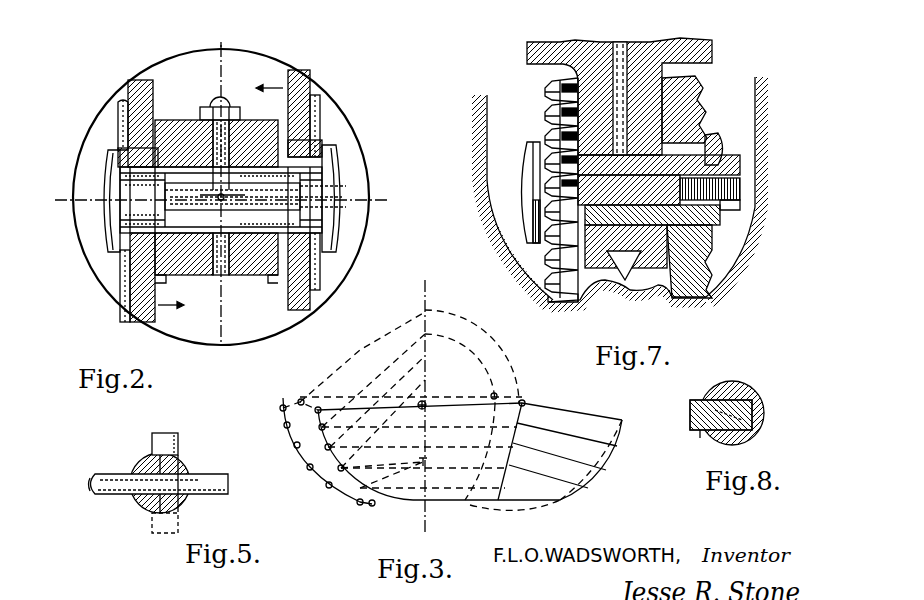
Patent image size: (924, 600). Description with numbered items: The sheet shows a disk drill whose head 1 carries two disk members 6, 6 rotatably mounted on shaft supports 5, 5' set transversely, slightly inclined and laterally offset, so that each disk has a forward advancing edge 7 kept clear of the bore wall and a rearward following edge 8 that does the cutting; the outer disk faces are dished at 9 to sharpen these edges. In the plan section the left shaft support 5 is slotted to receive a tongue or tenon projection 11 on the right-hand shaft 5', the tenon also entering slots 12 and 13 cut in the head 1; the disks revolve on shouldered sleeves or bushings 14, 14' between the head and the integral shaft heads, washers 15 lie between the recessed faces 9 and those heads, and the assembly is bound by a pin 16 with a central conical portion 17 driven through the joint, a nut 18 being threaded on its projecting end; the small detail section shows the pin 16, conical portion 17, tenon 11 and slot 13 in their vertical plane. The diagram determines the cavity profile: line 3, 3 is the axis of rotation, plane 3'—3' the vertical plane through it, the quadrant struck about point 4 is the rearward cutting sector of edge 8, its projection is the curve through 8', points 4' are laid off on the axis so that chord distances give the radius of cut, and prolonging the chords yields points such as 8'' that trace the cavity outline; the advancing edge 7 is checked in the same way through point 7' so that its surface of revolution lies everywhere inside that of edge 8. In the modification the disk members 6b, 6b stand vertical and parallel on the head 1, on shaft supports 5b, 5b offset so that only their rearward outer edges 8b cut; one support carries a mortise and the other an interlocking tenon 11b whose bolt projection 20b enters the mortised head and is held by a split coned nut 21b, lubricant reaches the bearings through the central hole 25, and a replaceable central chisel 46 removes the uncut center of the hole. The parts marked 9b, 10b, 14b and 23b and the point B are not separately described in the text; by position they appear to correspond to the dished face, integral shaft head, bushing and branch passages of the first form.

In FIG. 7, the head 1 is at (665, 67).
In FIG. 2, the axial line of rotation 3 is at (222, 174).
In FIG. 3, the axial line of rotation 3 is at (425, 407).
In FIG. 2, the vertical plane through the axis of rotation 3' is at (222, 198).
In FIG. 3, the center of cutting sector 4 is at (546, 460).
In FIG. 3, the construction points on the axis 4' is at (411, 397).
In FIG. 2, the shaft support 5 is at (192, 198).
In FIG. 3, the shaft support 5 is at (416, 410).
In FIG. 2, the right hand shaft support 5' is at (279, 198).
In FIG. 8, the shaft support 5b is at (747, 388).
In FIG. 2, the disk member 6 is at (136, 96).
In FIG. 7, the disk member 6b is at (703, 315).
In FIG. 2, the forward advancing edge 7 is at (219, 197).
In FIG. 3, the forward advancing edge 7 is at (499, 389).
In FIG. 3, the construction point for advancing edge 7' is at (362, 385).
In FIG. 2, the rearward following edge 8 is at (225, 205).
In FIG. 7, the rearward following edge 8 is at (652, 236).
In FIG. 3, the rearward following edge 8 is at (622, 415).
In FIG. 3, the projected point of cutting sector 8' is at (416, 454).
In FIG. 3, the point of cavity outline 8'' is at (327, 451).
In FIG. 7, the rearward following outer edge 8b is at (714, 294).
In FIG. 2, the recessed outer face 9 is at (321, 113).
In FIG. 7, the side block 9b is at (702, 262).
In FIG. 7, the cap piece 10b is at (718, 141).
In FIG. 2, the tenon projection 11 is at (186, 186).
In FIG. 5, the tenon projection 11 is at (181, 470).
In FIG. 7, the interlocking tenon 11b is at (629, 190).
In FIG. 8, the interlocking tenon 11b is at (706, 432).
In FIG. 5, the slot 12 is at (178, 440).
In FIG. 5, the slot 13 is at (156, 530).
In FIG. 2, the shouldered sleeve or bushing 14 is at (176, 287).
In FIG. 2, the notch 14' is at (273, 285).
In FIG. 7, the broken block 14b is at (703, 113).
In FIG. 2, the washer 15 is at (120, 143).
In FIG. 2, the pin 16 is at (231, 254).
In FIG. 5, the pin 16 is at (112, 496).
In FIG. 2, the central conical portion 17 is at (216, 197).
In FIG. 5, the central conical portion 17 is at (137, 462).
In FIG. 2, the nut 18 is at (208, 105).
In FIG. 7, the bolt projection 20b is at (756, 170).
In FIG. 8, the bolt projection 20b is at (752, 421).
In FIG. 7, the split coned nut 21b is at (722, 206).
In FIG. 7, the top cap 23b is at (670, 37).
In FIG. 7, the central hole 25 is at (620, 43).
In FIG. 7, the central replaceable chisel 46 is at (637, 284).
In FIG. 7, the point B is at (621, 132).